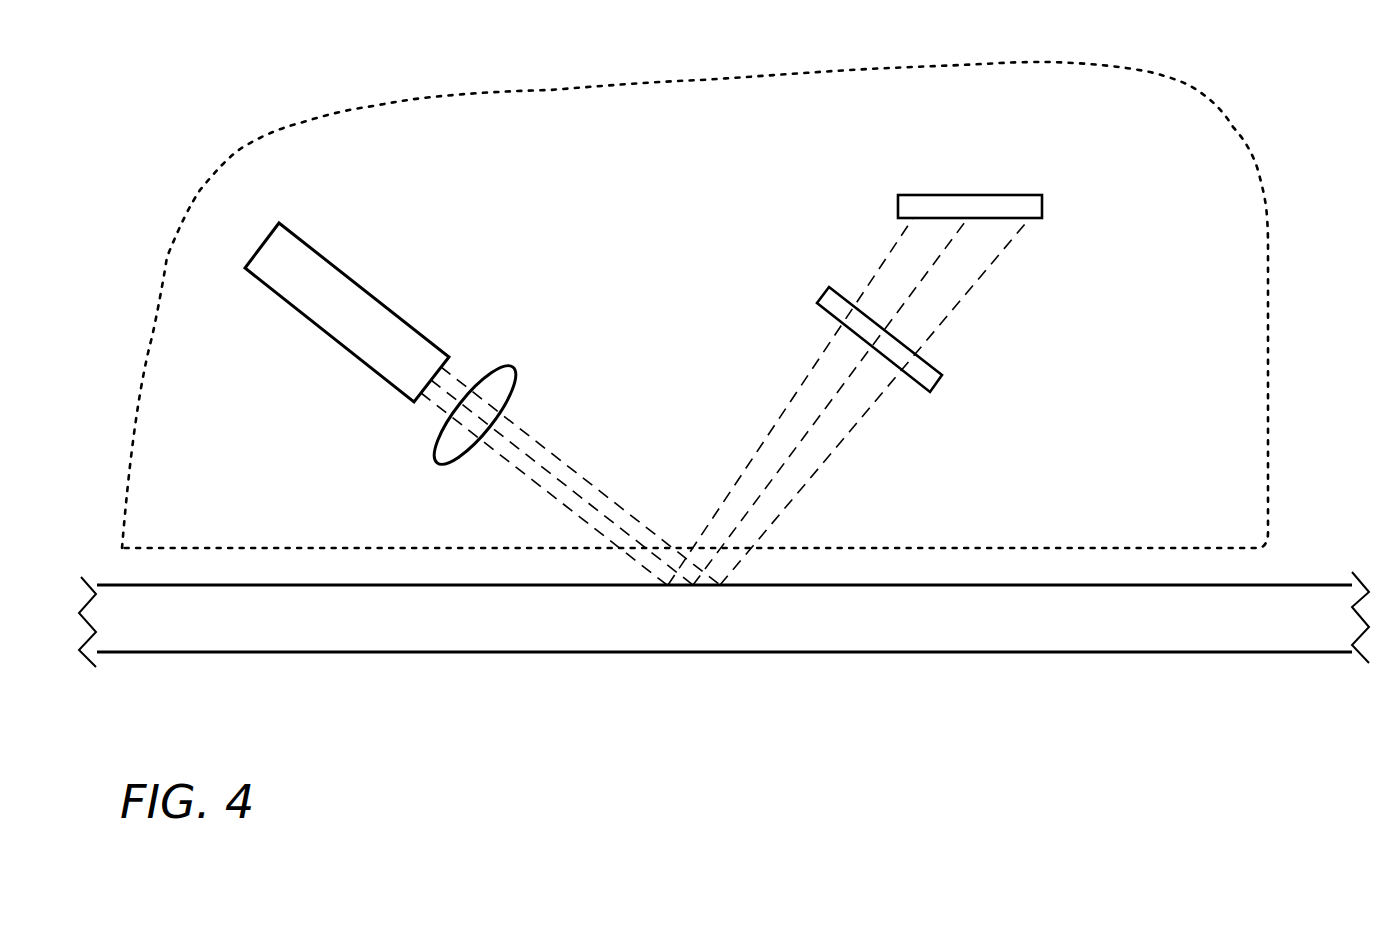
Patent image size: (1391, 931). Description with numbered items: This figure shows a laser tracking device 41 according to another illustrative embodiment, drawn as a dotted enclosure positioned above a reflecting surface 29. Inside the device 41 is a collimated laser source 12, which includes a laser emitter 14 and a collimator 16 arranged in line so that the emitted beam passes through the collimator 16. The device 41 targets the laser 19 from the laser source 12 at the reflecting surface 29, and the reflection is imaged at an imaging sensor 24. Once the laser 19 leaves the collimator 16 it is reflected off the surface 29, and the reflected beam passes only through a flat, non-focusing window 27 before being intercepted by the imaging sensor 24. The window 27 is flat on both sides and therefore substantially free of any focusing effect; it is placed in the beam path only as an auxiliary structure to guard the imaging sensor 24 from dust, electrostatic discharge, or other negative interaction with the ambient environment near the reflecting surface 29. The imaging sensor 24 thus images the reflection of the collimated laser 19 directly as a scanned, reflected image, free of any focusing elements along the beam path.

The collimated laser source 12 is at (540, 363).
The laser emitter 14 is at (296, 312).
The collimator 16 is at (433, 451).
The laser 19 is at (528, 428).
The imaging sensor 24 is at (978, 196).
The flat, non-focusing window 27 is at (940, 384).
The reflecting surface 29 is at (1280, 585).
The device 41 is at (1203, 101).